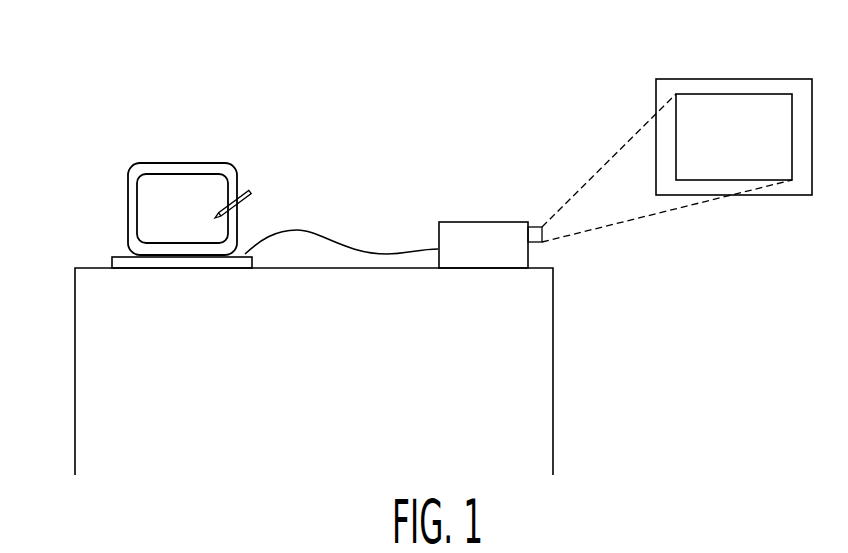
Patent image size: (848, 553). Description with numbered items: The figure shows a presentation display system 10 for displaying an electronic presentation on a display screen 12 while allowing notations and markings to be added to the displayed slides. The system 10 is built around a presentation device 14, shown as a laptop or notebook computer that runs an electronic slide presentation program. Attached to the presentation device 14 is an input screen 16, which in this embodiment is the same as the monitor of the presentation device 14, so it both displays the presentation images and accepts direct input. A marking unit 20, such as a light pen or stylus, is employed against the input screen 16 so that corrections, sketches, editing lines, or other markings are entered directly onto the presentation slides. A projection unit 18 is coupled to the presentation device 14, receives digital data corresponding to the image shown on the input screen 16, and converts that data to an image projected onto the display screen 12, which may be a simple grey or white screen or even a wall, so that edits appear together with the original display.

The presentation display system 10 is at (100, 122).
The display screen 12 is at (712, 78).
The presentation device 14 is at (112, 260).
The input screen 16 is at (215, 187).
The projection unit 18 is at (485, 221).
The marking unit 20 is at (242, 188).